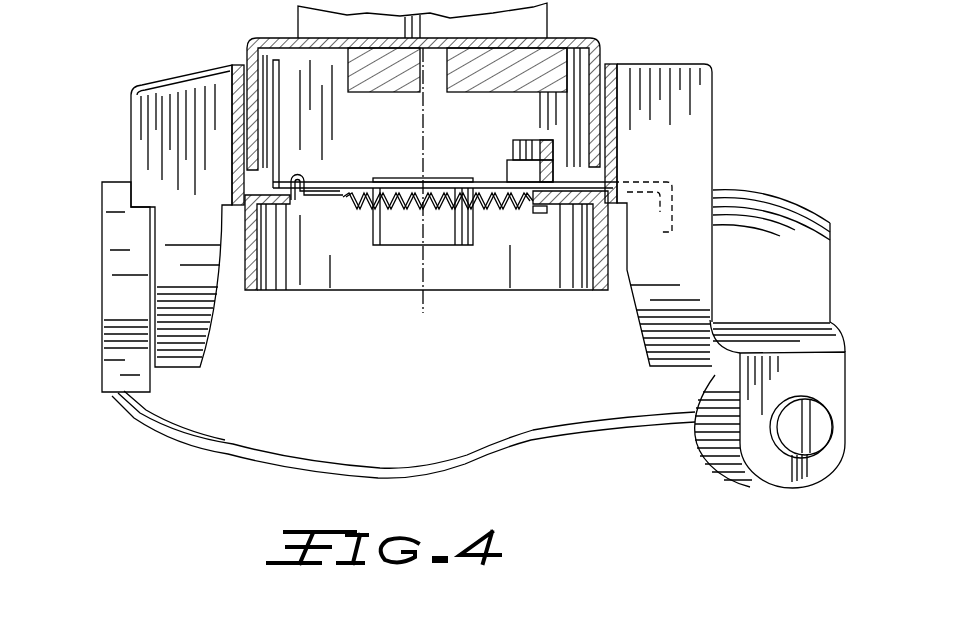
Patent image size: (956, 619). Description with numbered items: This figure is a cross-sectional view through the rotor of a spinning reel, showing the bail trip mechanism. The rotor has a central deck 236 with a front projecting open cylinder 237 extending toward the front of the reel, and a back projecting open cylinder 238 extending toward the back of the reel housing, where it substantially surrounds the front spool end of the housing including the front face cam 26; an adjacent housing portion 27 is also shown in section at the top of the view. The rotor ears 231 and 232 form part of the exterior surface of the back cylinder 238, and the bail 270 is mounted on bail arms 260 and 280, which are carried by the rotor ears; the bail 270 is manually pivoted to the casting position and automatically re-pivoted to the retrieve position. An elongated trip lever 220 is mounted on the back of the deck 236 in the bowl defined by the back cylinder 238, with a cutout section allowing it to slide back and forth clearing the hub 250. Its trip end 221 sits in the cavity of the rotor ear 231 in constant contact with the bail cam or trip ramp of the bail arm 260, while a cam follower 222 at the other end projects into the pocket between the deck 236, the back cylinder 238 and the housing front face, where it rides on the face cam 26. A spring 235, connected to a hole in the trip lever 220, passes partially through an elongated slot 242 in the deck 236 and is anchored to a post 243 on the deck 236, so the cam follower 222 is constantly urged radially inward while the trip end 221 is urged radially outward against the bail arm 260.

The face cam 26 is at (383, 93).
The housing cap 27 is at (601, 55).
The trip lever 220 is at (343, 182).
The trip end 221 is at (660, 232).
The cam follower 222 is at (280, 68).
The rotor ear 231 is at (700, 122).
The rotor ear 232 is at (153, 133).
The spring 235 is at (480, 213).
The central deck 236 is at (277, 206).
The front projecting open cylinder 237 is at (592, 292).
The back projecting open cylinder 238 is at (243, 64).
The elongated slot 242 is at (296, 204).
The post 243 is at (540, 214).
The hub 250 is at (443, 178).
The bail arm 260 is at (795, 222).
The bail 270 is at (385, 466).
The bail arm 280 is at (110, 290).